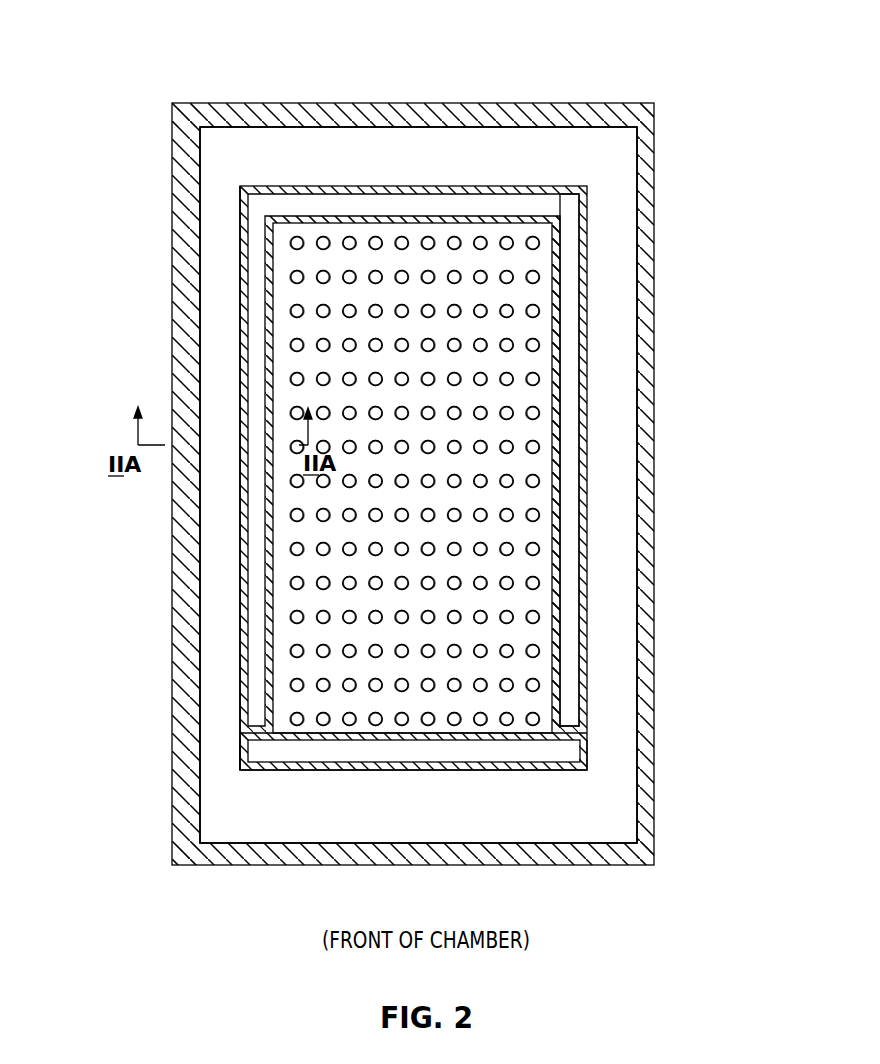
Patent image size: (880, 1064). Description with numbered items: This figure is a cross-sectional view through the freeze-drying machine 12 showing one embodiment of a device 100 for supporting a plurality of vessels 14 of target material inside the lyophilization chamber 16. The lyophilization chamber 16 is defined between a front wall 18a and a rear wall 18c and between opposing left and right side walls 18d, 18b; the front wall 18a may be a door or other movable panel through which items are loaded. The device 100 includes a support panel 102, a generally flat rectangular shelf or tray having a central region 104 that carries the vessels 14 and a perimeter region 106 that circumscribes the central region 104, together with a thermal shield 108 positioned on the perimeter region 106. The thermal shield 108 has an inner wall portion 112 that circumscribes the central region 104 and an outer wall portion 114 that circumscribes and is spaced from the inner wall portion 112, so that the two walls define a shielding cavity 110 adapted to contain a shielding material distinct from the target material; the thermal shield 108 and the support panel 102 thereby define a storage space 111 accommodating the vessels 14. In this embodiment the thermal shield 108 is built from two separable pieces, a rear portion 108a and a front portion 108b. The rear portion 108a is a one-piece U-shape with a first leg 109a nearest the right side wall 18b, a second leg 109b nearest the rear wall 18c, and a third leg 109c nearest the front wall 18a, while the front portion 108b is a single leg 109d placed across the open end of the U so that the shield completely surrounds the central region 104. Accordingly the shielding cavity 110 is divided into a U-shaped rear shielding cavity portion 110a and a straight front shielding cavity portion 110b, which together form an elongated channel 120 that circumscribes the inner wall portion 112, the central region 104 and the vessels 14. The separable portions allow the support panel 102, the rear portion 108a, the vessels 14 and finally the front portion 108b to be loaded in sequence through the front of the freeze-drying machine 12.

The freeze-drying machine 12 is at (655, 184).
The vessels 14 is at (320, 228).
The lyophilization chamber 16 is at (605, 310).
The front wall 18a is at (510, 842).
The right side wall 18b is at (637, 773).
The rear wall 18c is at (596, 128).
The left side wall 18d is at (200, 150).
The device 100 is at (431, 183).
The support panel 102 is at (221, 636).
The central region 104 is at (510, 530).
The perimeter region 106 is at (610, 627).
The thermal shield 108 is at (562, 417).
The rear portion 108a is at (590, 447).
The front portion 108b is at (246, 778).
The first leg 109a is at (588, 483).
The second leg 109b is at (515, 187).
The third leg 109c is at (240, 286).
The single leg 109d is at (424, 765).
The shielding cavity 110 is at (562, 363).
The rear shielding cavity portion 110a is at (571, 330).
The front shielding cavity portion 110b is at (327, 742).
The storage space 111 is at (293, 500).
The inner wall portion 112 is at (560, 663).
The outer wall portion 114 is at (578, 713).
The elongated channel 120 is at (412, 474).